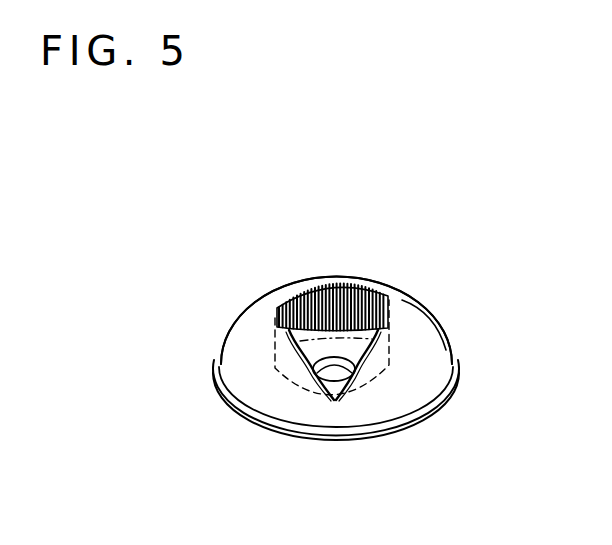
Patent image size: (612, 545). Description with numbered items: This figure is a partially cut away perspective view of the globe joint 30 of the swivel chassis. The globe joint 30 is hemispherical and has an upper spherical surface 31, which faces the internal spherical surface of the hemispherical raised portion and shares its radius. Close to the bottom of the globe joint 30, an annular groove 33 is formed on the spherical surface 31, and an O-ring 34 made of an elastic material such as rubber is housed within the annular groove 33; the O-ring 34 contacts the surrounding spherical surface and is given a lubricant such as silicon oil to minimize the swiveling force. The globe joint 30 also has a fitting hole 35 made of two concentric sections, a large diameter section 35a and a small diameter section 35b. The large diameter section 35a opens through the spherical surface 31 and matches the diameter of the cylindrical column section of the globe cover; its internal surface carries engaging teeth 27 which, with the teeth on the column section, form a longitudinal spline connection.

The engaging teeth 27 is at (345, 287).
The globe joint 30 is at (185, 270).
The upper spherical surface 31 is at (248, 308).
The annular groove 33 is at (243, 403).
The O-ring 34 is at (420, 402).
The fitting hole 35 is at (375, 298).
The large diameter section 35a is at (286, 300).
The small diameter section 35b is at (338, 374).